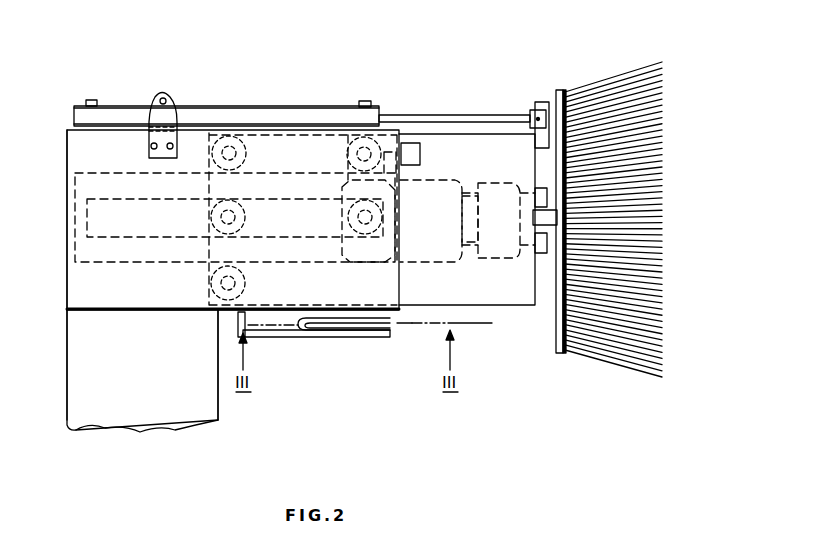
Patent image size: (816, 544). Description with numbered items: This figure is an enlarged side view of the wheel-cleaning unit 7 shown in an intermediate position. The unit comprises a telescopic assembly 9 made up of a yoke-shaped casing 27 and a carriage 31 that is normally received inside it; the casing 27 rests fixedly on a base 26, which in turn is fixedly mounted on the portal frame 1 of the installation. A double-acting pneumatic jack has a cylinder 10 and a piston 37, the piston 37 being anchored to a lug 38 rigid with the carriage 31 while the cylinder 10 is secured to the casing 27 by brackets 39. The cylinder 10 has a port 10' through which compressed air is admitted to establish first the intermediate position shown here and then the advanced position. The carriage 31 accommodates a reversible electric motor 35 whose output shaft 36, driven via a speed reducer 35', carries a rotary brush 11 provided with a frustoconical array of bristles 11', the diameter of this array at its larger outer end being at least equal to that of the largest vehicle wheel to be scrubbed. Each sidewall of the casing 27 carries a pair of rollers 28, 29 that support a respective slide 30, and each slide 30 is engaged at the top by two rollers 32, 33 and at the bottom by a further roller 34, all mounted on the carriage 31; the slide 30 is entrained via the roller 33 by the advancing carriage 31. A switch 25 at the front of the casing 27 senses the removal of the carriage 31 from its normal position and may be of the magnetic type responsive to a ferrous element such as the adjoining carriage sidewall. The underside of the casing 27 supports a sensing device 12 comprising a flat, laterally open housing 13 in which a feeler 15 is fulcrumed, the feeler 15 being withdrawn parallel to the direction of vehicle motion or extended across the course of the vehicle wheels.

The portal frame 1 is at (57, 351).
The wheel-cleaning unit 7 is at (145, 78).
The telescopic assembly 9 is at (57, 157).
The cylinder 10 is at (302, 68).
The port 10' is at (232, 87).
The rotary brush 11 is at (577, 262).
The bristles 11' is at (650, 219).
The sensing device 12 is at (358, 338).
The housing 13 is at (303, 337).
The feeler 15 is at (490, 323).
The switch 25 is at (410, 157).
The base 26 is at (218, 402).
The yoke-shaped casing 27 is at (73, 288).
The roller 28 is at (226, 226).
The roller 29 is at (364, 226).
The slide 30 is at (78, 187).
The carriage 31 is at (508, 288).
The roller 32 is at (229, 135).
The roller 33 is at (362, 150).
The roller 34 is at (226, 294).
The reversible electric motor 35 is at (439, 167).
The speed reducer 35' is at (506, 171).
The output shaft 36 is at (557, 226).
The piston 37 is at (466, 185).
The lug 38 is at (543, 102).
The brackets 39 is at (172, 96).